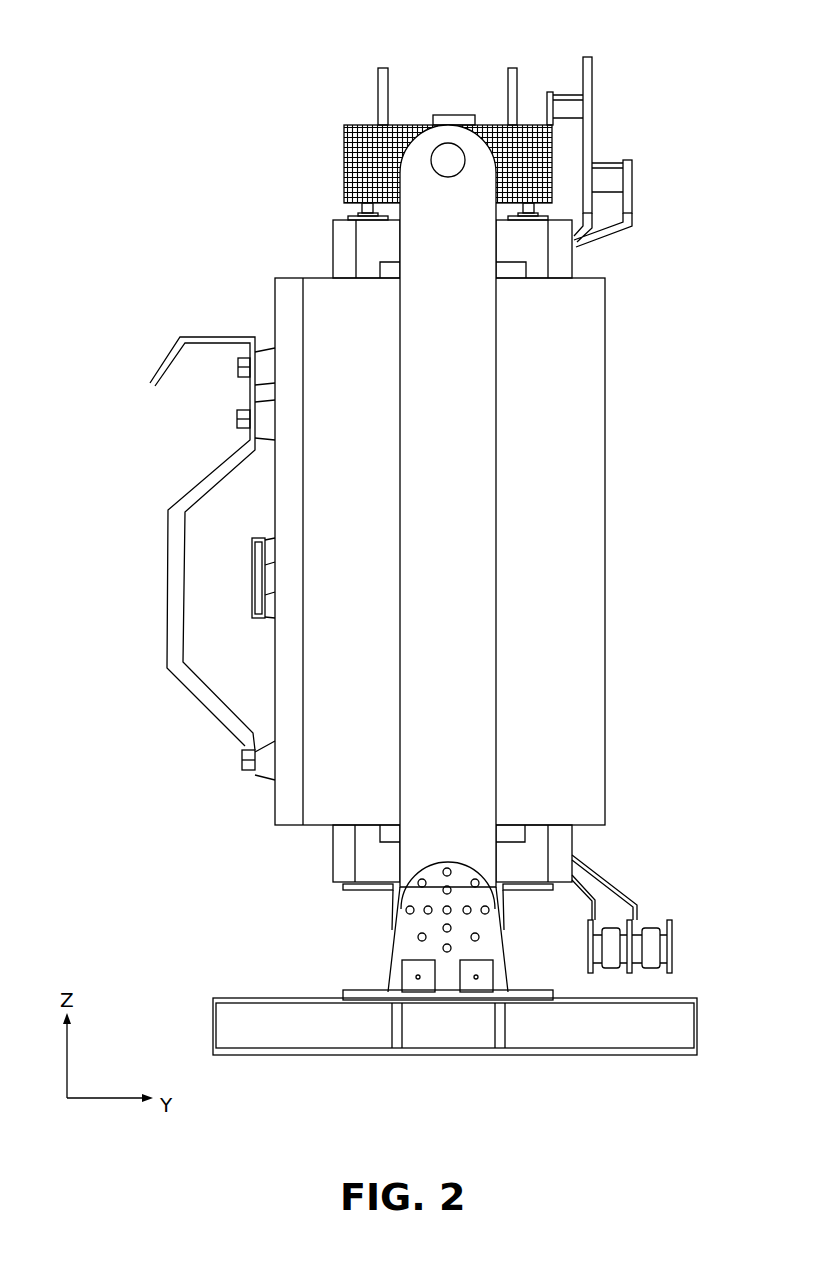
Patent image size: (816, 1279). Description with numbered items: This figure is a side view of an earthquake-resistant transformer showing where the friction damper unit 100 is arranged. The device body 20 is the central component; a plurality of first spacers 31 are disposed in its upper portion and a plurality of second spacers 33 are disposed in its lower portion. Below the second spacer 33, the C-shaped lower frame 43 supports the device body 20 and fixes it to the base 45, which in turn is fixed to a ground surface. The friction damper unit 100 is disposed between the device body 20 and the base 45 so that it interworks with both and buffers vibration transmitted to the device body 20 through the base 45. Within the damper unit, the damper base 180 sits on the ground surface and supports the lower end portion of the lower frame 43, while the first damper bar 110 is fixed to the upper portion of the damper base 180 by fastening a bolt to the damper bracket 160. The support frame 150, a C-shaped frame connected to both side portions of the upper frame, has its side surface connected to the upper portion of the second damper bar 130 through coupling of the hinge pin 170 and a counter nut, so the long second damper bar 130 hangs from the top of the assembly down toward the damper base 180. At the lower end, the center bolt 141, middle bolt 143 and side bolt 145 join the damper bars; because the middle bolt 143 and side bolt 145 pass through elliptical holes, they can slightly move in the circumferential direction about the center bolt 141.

The device body 20 is at (332, 488).
The first spacer 31 is at (343, 237).
The second spacer 33 is at (343, 842).
The lower frame 43 is at (365, 888).
The base 45 is at (278, 1030).
The friction damper unit 100 is at (483, 570).
The first damper bar 110 is at (445, 973).
The second damper bar 130 is at (455, 610).
The center bolt 141 is at (447, 906).
The middle bolt 143 is at (447, 928).
The side bolt 145 is at (447, 945).
The support frame 150 is at (542, 120).
The damper bracket 160 is at (481, 1000).
The hinge pin 170 is at (448, 158).
The damper base 180 is at (452, 1030).